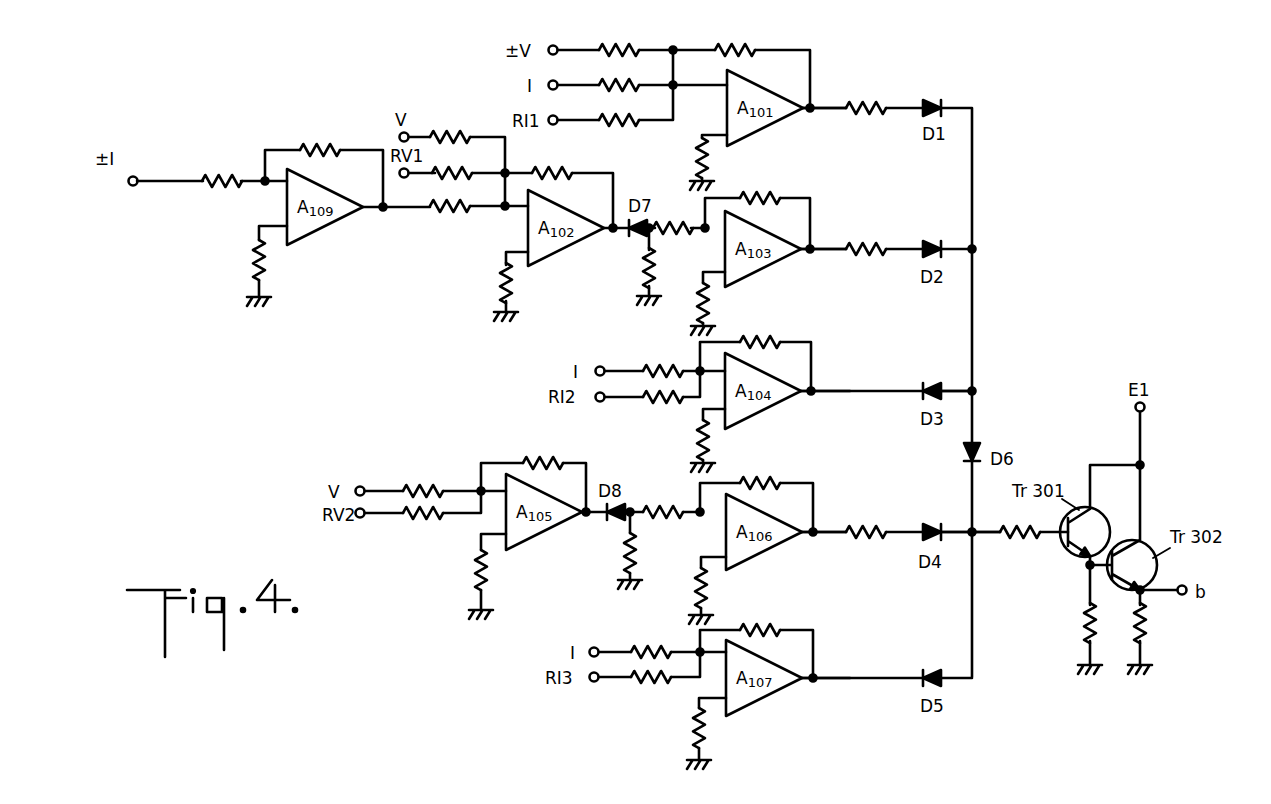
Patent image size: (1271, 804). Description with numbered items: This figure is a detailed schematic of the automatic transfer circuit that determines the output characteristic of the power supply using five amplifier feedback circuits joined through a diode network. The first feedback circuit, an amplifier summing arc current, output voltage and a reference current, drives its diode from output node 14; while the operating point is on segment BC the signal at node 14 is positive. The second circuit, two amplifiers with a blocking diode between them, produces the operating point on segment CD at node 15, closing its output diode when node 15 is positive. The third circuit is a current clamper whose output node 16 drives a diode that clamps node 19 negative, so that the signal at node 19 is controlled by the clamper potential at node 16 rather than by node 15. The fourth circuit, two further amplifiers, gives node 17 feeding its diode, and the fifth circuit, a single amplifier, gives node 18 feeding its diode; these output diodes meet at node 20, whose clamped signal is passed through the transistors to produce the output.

The node 14 is at (811, 111).
The node 15 is at (810, 252).
The node 16 is at (813, 394).
The node 17 is at (815, 535).
The node 18 is at (815, 682).
The node 19 is at (976, 391).
The node 20 is at (975, 535).